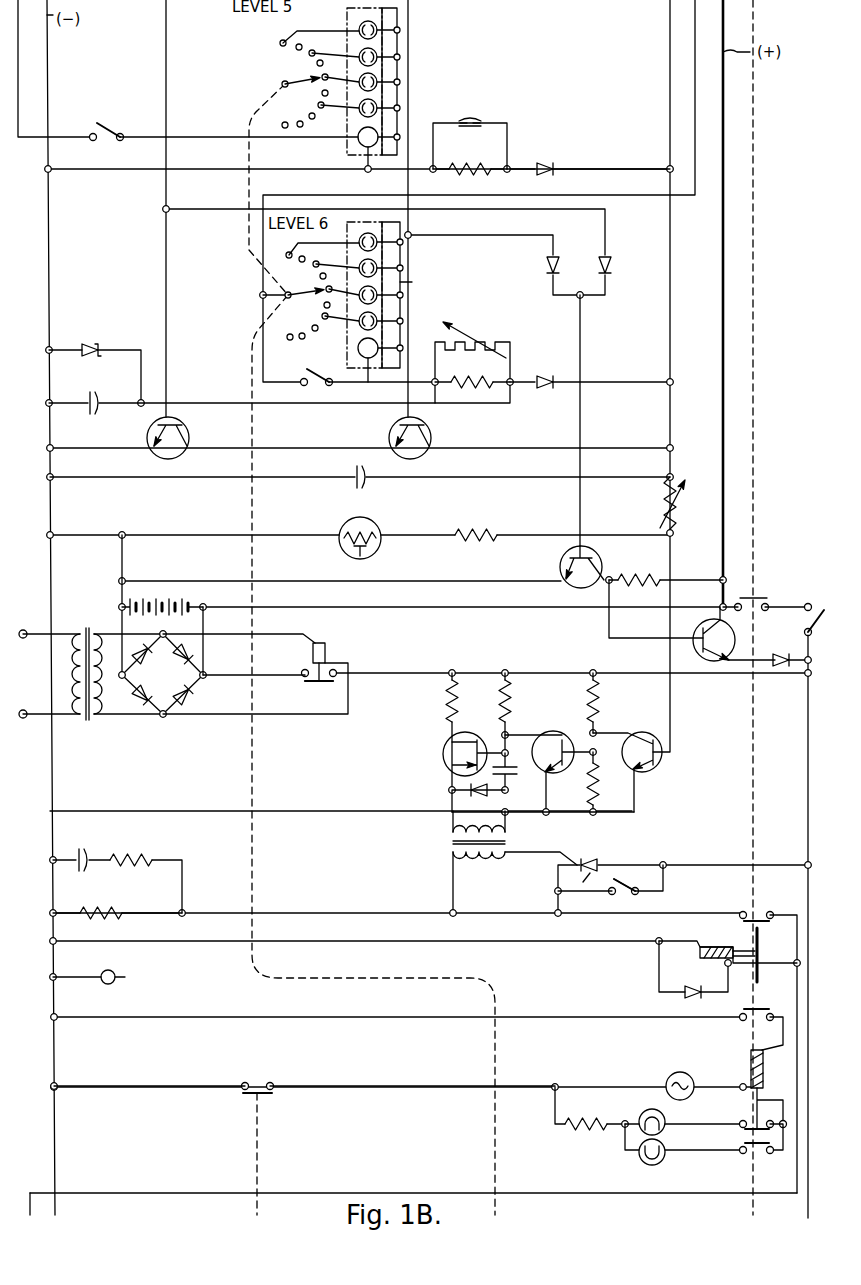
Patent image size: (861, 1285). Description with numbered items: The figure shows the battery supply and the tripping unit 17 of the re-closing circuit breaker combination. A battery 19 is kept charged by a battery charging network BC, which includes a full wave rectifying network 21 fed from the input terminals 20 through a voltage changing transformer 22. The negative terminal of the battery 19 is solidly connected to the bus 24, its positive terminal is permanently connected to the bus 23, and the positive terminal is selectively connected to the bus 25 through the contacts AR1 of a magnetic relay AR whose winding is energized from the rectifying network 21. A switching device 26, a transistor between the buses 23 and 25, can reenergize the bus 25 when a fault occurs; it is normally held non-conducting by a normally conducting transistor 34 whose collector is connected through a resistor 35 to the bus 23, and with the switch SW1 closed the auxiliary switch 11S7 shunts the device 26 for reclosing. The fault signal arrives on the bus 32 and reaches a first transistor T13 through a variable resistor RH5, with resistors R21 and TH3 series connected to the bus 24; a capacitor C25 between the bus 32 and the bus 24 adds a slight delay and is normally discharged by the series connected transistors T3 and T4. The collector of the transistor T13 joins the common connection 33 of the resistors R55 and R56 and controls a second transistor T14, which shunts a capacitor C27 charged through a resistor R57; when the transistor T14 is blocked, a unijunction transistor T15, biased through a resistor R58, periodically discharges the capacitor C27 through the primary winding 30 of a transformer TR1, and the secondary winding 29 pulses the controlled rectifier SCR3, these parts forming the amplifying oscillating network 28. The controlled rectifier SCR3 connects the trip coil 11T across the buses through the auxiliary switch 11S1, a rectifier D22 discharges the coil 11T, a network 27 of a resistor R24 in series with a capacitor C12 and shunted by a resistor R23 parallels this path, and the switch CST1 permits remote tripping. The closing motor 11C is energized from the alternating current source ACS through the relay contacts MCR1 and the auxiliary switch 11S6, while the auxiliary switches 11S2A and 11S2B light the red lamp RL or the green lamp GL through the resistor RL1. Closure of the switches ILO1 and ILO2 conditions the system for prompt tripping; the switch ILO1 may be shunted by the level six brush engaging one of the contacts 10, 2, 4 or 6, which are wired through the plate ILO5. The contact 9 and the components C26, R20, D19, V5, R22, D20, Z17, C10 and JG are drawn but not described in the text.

The negative bus 24 is at (49, 237).
The bus 32 is at (670, 50).
The positive bus 23 is at (723, 325).
The positive bus 25 is at (390, 673).
The switch ILO2 is at (120, 115).
The plate ILO5 is at (425, 283).
The switch ILO1 is at (330, 362).
The contact 10 is at (280, 44).
The contact 2 is at (314, 51).
The contact 4 is at (320, 75).
The contact 6 is at (321, 104).
The selector contact position 9 is at (286, 122).
The capacitor C26 is at (470, 110).
The resistor R20 is at (494, 162).
The diode D19 is at (541, 160).
The varistor V5 is at (483, 332).
The resistor R22 is at (486, 372).
The diode D20 is at (541, 373).
The zener diode Z17 is at (92, 343).
The capacitor C10 is at (98, 392).
The transistor T3 is at (188, 425).
The transistor T4 is at (390, 425).
The capacitor C25 is at (352, 468).
The resistor TH3 is at (372, 521).
The resistor R21 is at (466, 528).
The variable resistor RH5 is at (664, 508).
The transistor 34 is at (560, 560).
The resistor 35 is at (626, 573).
The auxiliary switch 11S7 is at (767, 600).
The switch SW1 is at (804, 632).
The switching device 26 is at (700, 655).
The battery 19 is at (205, 611).
The voltage changing transformer 22 is at (86, 627).
The input terminals 20 is at (23, 640).
The full wave rectifying network 21 is at (163, 674).
The battery charging network BC is at (158, 740).
The magnetic type relay AR is at (326, 648).
The relay contacts AR1 is at (312, 682).
The amplifying oscillating network 28 is at (402, 752).
The tripping unit 17 is at (695, 796).
The resistor R58 is at (447, 696).
The resistor R57 is at (500, 696).
The resistor R55 is at (590, 696).
The unijunction transistor T15 is at (478, 732).
The capacitor C27 is at (518, 775).
The second transistor T14 is at (553, 714).
The common connection 33 is at (603, 758).
The resistor R56 is at (588, 785).
The first transistor T13 is at (642, 732).
The primary winding 30 is at (453, 822).
The transformer TR1 is at (447, 846).
The secondary winding 29 is at (485, 852).
The silicon controlled rectifier SCR3 is at (592, 856).
The switch CST1 is at (630, 896).
The auxiliary switch 11S1 is at (756, 906).
The trip coil 11T is at (726, 937).
The rectifier D22 is at (688, 985).
The auxiliary switch 11S6 is at (766, 1008).
The closing motor 11C is at (748, 1055).
The alternating current source ACS is at (674, 1074).
The resistor RL1 is at (598, 1118).
The red lamp RL is at (648, 1110).
The green lamp GL is at (640, 1160).
The auxiliary switch 11S2A is at (745, 1115).
The auxiliary switch 11S2B is at (745, 1143).
The network 27 is at (125, 894).
The capacitor C12 is at (82, 848).
The resistor R24 is at (126, 852).
The resistor R23 is at (118, 916).
The jack JG is at (125, 977).
The relay contacts MCR1 is at (264, 1096).